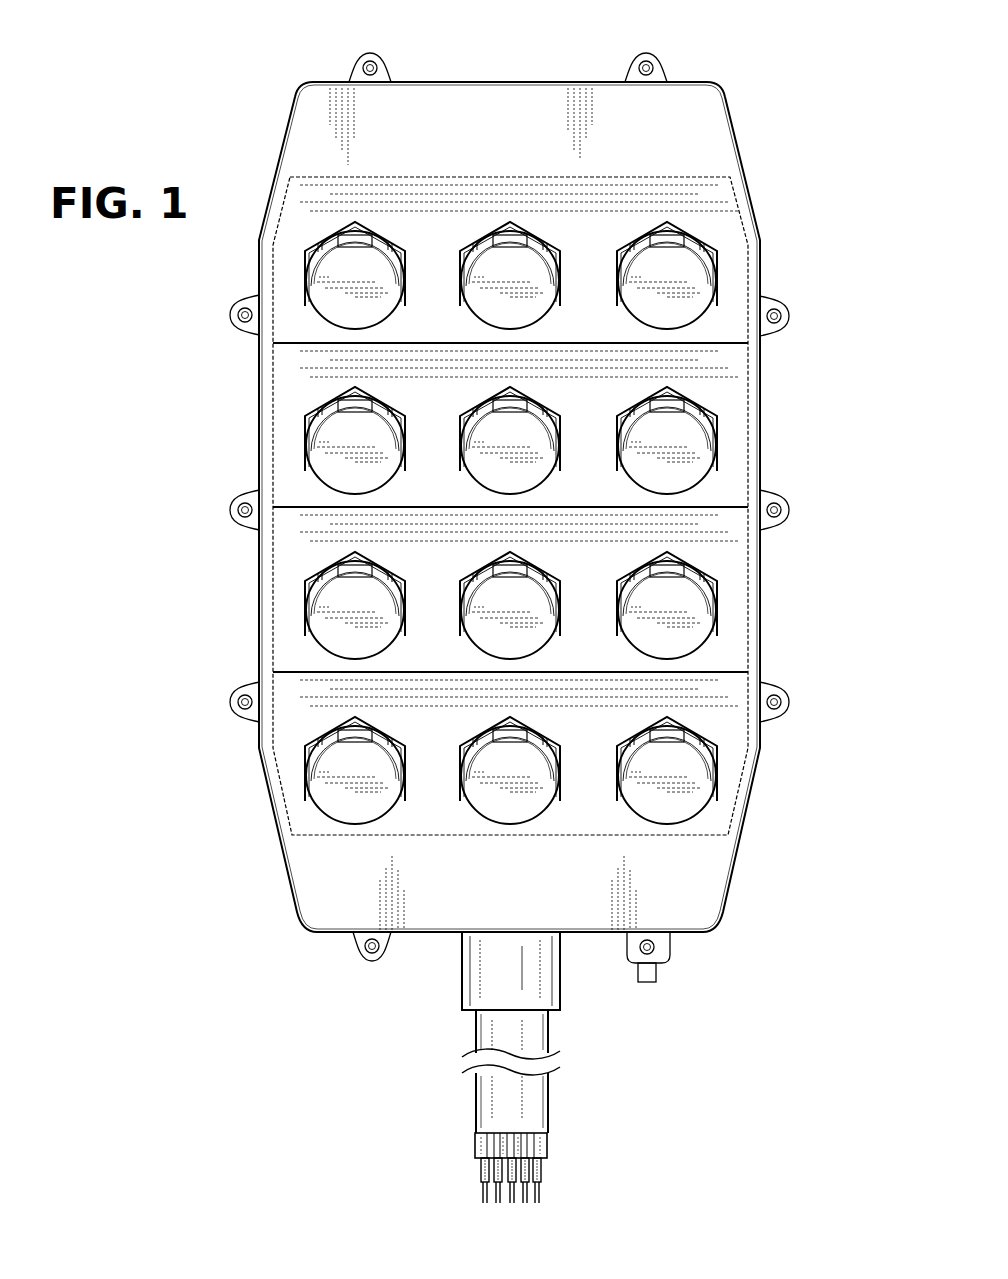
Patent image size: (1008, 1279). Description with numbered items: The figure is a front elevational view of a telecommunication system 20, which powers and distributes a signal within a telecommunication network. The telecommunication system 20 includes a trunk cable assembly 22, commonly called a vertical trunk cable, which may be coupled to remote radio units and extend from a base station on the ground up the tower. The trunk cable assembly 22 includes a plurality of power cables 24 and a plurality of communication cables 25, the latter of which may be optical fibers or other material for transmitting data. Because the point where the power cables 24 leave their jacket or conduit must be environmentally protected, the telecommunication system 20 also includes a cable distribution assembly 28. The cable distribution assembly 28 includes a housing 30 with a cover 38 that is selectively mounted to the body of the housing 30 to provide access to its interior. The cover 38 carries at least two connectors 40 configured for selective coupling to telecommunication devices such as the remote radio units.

The telecommunication system 20 is at (796, 92).
The trunk cable assembly 22 is at (583, 1027).
The power cables 24 is at (513, 1149).
The communication cables 25 is at (483, 1200).
The cable distribution assembly 28 is at (214, 429).
The housing 30 is at (312, 133).
The cover 38 is at (470, 112).
The connectors 40 is at (660, 309).